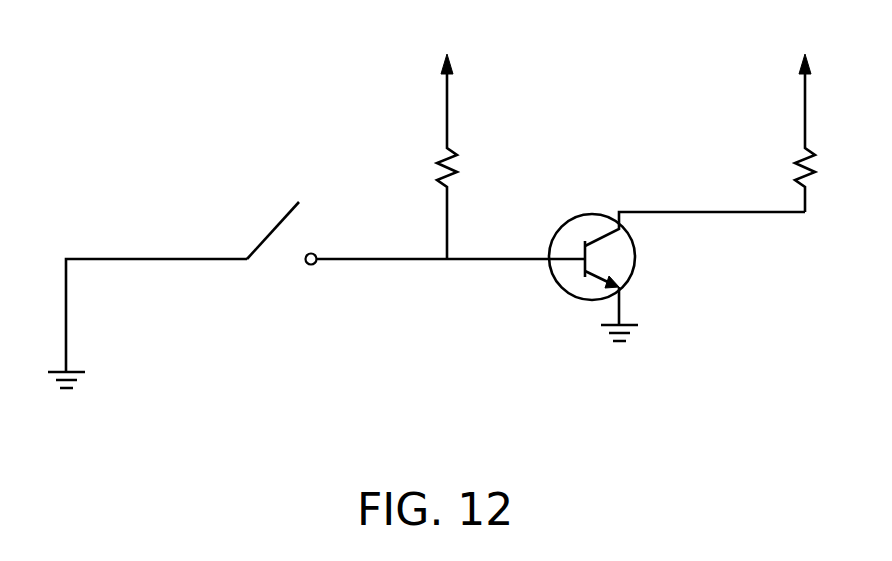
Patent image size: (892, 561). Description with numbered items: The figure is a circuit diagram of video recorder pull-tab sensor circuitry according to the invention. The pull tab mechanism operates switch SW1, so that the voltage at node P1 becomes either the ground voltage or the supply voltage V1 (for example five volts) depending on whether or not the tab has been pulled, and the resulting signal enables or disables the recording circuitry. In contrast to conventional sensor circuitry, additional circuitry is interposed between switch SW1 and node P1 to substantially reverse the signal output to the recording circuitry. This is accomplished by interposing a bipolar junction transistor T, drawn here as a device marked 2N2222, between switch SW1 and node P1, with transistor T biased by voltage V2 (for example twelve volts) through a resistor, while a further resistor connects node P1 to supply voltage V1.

The switch SW1 is at (265, 230).
The bias voltage V2 is at (460, 146).
The supply voltage V1 is at (820, 122).
The bipolar junction transistor T is at (675, 268).
The transistor part number 2N2222 is at (690, 272).
The output node P1 is at (806, 194).